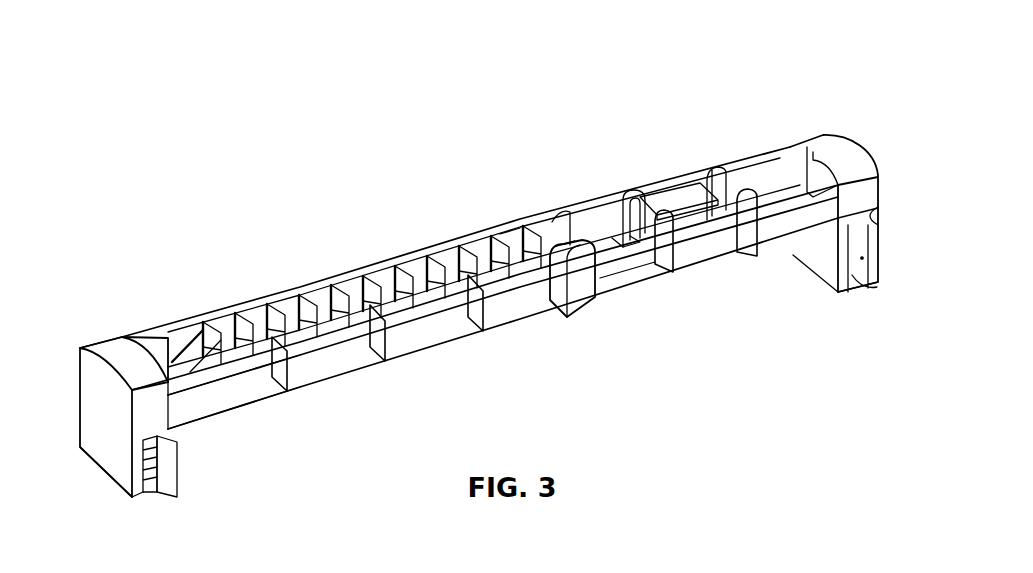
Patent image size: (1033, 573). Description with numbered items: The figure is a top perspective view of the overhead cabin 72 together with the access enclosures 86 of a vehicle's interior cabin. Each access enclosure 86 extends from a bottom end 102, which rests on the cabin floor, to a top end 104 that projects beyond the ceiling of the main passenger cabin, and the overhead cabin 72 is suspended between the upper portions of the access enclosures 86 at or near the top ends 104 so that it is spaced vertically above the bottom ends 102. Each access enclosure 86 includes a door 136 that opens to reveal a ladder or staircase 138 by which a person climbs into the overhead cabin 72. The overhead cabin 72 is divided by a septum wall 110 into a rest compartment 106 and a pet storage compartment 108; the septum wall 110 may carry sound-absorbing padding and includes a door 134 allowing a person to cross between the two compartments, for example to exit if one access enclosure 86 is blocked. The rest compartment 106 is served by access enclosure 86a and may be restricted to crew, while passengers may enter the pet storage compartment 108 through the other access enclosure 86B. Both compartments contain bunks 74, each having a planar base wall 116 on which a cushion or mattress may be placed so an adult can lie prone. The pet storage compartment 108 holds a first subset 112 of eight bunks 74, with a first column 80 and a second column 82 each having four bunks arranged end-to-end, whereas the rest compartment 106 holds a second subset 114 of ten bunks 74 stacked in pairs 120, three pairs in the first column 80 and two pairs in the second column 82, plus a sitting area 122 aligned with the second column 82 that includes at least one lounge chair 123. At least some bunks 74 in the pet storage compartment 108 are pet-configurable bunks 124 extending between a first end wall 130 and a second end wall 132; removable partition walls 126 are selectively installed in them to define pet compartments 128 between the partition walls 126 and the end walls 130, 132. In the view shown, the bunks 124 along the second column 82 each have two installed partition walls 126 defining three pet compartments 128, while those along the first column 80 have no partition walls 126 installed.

The overhead cabin 72 is at (436, 128).
The bunks 74 is at (194, 310).
The first column 80 is at (230, 399).
The second column 82 is at (198, 312).
The access enclosures 86 is at (120, 347).
The access enclosure 86a is at (870, 188).
The access enclosure 86B is at (122, 457).
The bottom end 102 is at (144, 505).
The top end 104 is at (86, 340).
The rest compartment 106 is at (670, 180).
The pet storage compartment 108 is at (260, 290).
The septum wall 110 is at (522, 228).
The first subset 112 is at (291, 283).
The second subset 114 is at (689, 173).
The base wall 116 is at (247, 387).
The pairs 120 is at (662, 274).
The sitting area 122 is at (590, 205).
The lounge chair 123 is at (622, 228).
The pet-configurable bunks 124 is at (213, 317).
The partition walls 126 is at (360, 280).
The pet compartments 128 is at (366, 288).
The first end wall 130 is at (446, 258).
The second end wall 132 is at (335, 282).
The door 134 is at (565, 218).
The door 136 is at (167, 482).
The ladder or staircase 138 is at (138, 495).